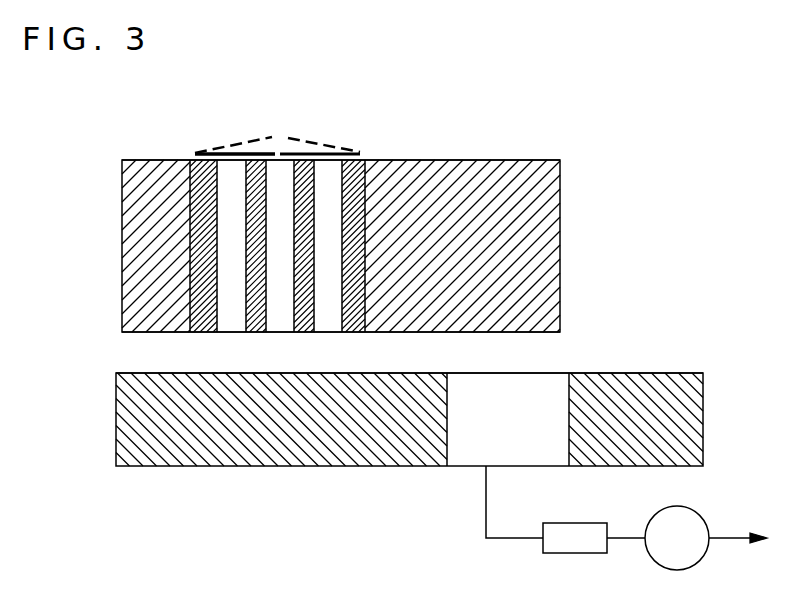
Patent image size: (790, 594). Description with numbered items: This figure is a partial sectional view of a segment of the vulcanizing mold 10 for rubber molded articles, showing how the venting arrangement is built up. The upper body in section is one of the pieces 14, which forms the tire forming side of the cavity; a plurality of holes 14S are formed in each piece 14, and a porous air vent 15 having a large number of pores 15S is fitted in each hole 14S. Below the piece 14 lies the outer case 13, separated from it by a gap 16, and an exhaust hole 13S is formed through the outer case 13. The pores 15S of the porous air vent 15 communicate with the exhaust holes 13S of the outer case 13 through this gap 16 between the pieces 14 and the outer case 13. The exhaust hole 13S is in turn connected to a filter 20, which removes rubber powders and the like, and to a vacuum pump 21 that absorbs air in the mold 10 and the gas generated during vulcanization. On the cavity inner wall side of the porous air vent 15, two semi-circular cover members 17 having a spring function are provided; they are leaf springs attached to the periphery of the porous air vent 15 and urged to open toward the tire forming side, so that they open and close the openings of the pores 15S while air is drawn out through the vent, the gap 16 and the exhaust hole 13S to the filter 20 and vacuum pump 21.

The mold 10 is at (418, 159).
The outer case 13 is at (599, 385).
The exhaust holes 13S is at (448, 430).
The pieces 14 is at (483, 167).
The holes 14S is at (352, 235).
The porous air vent 15 is at (362, 160).
The pores 15S is at (236, 205).
The gap 16 is at (148, 362).
The cover members 17 is at (248, 150).
The filter 20 is at (561, 523).
The vacuum pump 21 is at (677, 507).